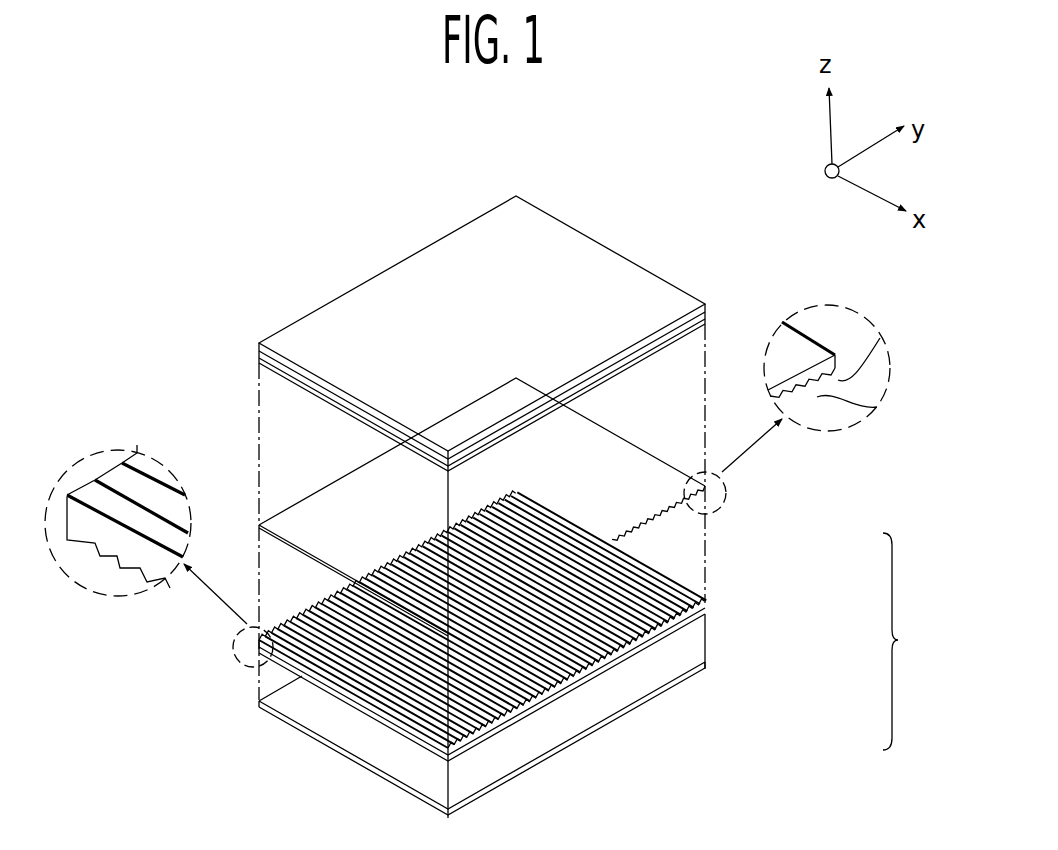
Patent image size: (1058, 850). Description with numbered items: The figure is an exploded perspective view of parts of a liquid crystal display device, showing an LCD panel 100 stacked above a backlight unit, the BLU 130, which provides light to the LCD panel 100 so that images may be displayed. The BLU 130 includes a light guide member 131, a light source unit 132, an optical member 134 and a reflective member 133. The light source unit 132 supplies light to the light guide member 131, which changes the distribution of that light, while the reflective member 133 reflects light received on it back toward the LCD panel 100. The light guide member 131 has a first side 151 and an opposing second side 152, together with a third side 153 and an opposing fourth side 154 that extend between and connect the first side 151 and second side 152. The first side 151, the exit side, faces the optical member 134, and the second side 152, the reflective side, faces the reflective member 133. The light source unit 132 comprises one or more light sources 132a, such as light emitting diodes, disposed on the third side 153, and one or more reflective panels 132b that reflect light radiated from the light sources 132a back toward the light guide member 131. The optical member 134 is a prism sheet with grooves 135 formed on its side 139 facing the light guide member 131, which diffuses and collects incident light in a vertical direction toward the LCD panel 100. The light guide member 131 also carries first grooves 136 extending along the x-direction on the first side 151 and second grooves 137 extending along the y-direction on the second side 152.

The LCD panel 100 is at (623, 277).
The BLU 130 is at (910, 641).
The light guide member 131 is at (706, 640).
The light source unit 132 is at (827, 583).
The light source 132a is at (705, 614).
The reflective panel 132b is at (705, 603).
The reflective member 133 is at (706, 668).
The optical member 134 is at (705, 547).
The grooves 135 is at (877, 407).
The first grooves 136 is at (103, 494).
The second grooves 137 is at (117, 557).
The side 139 is at (887, 340).
The first side 151 is at (291, 608).
The second side 152 is at (571, 707).
The third side 153 is at (669, 575).
The fourth side 154 is at (344, 711).